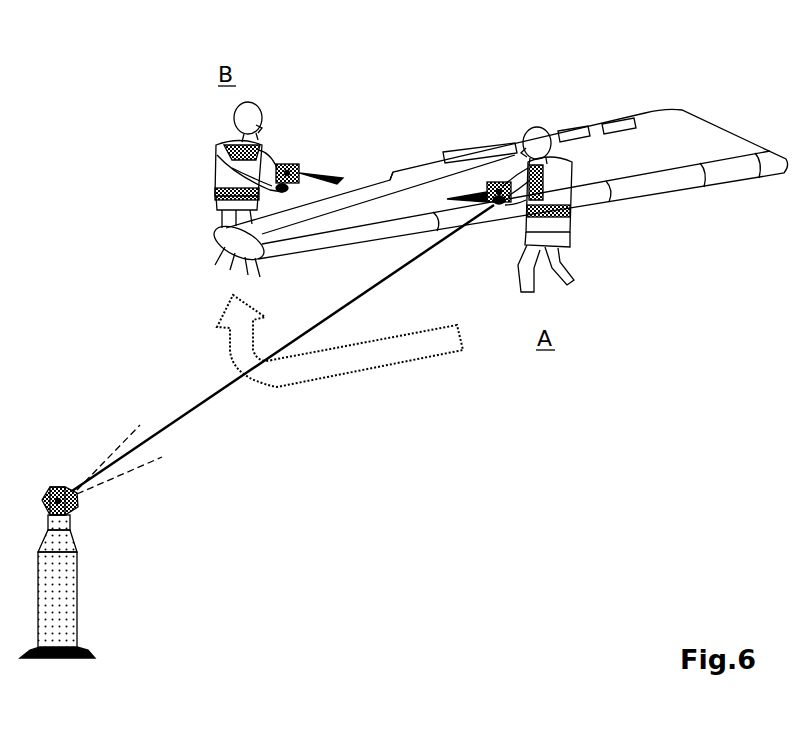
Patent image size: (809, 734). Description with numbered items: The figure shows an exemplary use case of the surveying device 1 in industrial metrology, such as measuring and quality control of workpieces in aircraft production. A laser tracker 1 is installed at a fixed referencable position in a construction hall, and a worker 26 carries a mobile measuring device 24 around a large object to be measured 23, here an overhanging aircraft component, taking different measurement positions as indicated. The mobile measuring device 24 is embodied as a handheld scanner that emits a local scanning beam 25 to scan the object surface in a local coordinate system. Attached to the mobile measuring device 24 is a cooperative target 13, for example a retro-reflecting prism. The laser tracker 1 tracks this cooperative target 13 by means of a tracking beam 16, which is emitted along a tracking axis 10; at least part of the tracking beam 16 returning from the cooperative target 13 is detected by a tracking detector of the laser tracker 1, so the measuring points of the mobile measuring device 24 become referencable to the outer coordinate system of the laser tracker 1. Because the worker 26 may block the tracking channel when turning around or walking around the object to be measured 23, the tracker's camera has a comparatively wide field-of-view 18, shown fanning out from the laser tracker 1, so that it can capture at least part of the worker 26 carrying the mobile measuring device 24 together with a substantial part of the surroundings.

The surveying device 1 is at (108, 601).
The tracking axis 10 is at (203, 402).
The tracking beam 16 is at (282, 348).
The field-of-view 18 is at (135, 470).
The cooperative target 13 is at (285, 223).
The object to be measured 23 is at (643, 172).
The mobile measuring device 24 is at (288, 224).
The local scanning beam 25 is at (417, 175).
The worker 26 is at (224, 150).